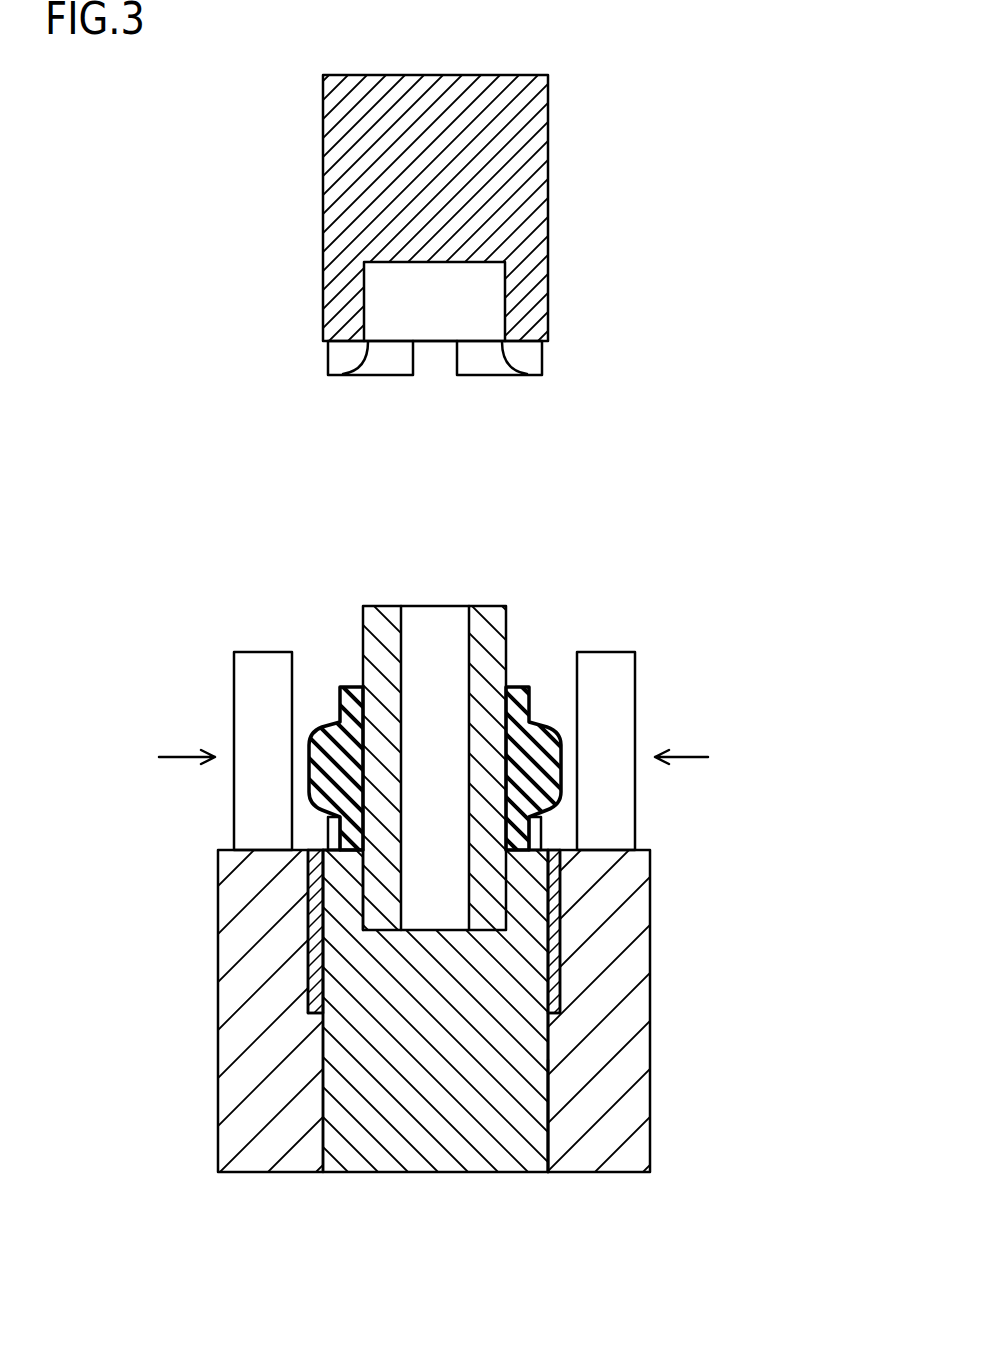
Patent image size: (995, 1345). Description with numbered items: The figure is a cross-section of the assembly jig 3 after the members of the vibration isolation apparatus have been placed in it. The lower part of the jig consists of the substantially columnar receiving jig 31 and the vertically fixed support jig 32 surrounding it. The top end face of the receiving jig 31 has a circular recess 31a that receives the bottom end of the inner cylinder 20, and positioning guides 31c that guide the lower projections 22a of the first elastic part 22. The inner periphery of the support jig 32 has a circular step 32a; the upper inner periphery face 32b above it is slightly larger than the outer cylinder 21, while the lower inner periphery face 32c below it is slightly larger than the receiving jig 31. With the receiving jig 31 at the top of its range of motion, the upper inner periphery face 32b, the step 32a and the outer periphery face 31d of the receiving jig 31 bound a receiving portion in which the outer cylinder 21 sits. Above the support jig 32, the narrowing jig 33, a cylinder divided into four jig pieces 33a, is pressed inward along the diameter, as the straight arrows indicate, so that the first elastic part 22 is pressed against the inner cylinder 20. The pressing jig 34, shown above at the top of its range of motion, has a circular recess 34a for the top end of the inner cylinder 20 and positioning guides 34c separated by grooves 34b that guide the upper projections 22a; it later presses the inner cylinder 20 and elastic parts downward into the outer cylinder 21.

The assembly jig 3 is at (708, 408).
The inner cylinder 20 is at (487, 605).
The outer cylinder 21 is at (560, 936).
The first elastic part 22 is at (430, 718).
The projection 22a is at (350, 690).
The receiving jig 31 is at (438, 1016).
The recess 31a is at (370, 866).
The positioning guide 31c is at (328, 825).
The outer periphery face 31d is at (548, 1085).
The support jig 32 is at (475, 1042).
The step 32a is at (560, 994).
The upper inner periphery face 32b is at (560, 882).
The lower inner periphery face 32c is at (547, 1110).
The narrowing jig 33 is at (437, 733).
The jig piece 33a is at (234, 695).
The pressing jig 34 is at (439, 269).
The recess 34a is at (365, 295).
The groove 34b is at (432, 352).
The positioning guide 34c is at (340, 358).